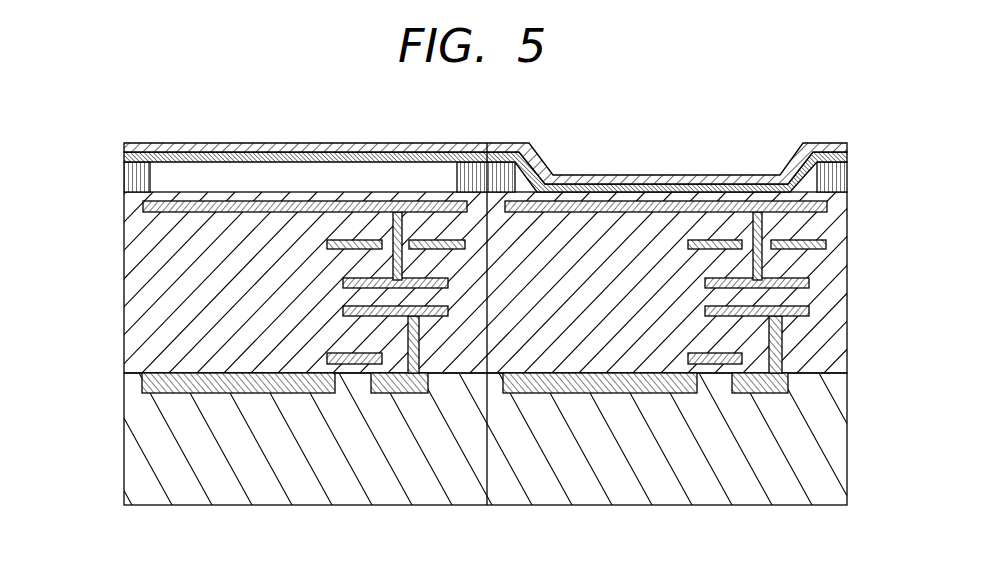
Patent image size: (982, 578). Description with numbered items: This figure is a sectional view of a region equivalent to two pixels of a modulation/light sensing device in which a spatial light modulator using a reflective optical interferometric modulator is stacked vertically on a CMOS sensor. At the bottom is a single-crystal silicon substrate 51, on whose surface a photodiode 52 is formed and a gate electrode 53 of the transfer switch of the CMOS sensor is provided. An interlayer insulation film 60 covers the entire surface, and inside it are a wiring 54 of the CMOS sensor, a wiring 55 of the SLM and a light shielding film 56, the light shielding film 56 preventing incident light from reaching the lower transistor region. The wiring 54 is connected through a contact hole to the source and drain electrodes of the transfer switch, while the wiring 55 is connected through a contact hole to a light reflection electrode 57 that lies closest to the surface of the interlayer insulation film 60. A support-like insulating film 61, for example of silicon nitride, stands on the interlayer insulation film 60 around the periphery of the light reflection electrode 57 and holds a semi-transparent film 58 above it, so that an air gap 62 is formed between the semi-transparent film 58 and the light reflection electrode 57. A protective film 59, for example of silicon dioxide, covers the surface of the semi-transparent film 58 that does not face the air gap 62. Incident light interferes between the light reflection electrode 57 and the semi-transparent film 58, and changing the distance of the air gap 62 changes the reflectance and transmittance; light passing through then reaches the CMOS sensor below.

The single-crystal silicon substrate 51 is at (132, 453).
The photodiode 52 is at (238, 381).
The gate electrode 53 is at (327, 356).
The wiring of the CMOS sensor 54 is at (448, 310).
The wiring of the SLM 55 is at (448, 282).
The light shielding film 56 is at (465, 243).
The light reflection electrode 57 is at (190, 212).
The semi-transparent film 58 is at (124, 160).
The protective film 59 is at (157, 144).
The interlayer insulation film 60 is at (130, 330).
The support-like insulating film 61 is at (124, 178).
The air gap 62 is at (314, 178).